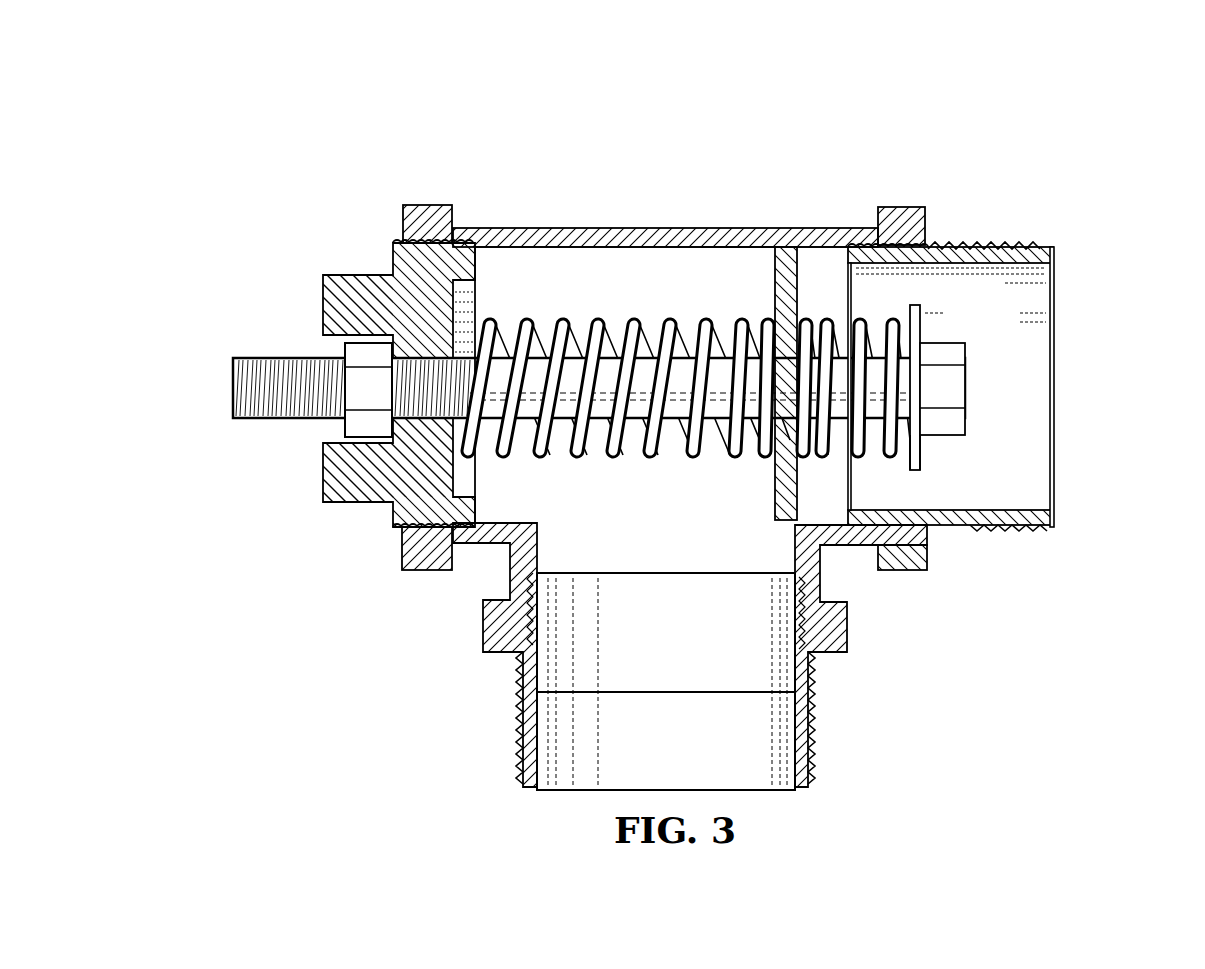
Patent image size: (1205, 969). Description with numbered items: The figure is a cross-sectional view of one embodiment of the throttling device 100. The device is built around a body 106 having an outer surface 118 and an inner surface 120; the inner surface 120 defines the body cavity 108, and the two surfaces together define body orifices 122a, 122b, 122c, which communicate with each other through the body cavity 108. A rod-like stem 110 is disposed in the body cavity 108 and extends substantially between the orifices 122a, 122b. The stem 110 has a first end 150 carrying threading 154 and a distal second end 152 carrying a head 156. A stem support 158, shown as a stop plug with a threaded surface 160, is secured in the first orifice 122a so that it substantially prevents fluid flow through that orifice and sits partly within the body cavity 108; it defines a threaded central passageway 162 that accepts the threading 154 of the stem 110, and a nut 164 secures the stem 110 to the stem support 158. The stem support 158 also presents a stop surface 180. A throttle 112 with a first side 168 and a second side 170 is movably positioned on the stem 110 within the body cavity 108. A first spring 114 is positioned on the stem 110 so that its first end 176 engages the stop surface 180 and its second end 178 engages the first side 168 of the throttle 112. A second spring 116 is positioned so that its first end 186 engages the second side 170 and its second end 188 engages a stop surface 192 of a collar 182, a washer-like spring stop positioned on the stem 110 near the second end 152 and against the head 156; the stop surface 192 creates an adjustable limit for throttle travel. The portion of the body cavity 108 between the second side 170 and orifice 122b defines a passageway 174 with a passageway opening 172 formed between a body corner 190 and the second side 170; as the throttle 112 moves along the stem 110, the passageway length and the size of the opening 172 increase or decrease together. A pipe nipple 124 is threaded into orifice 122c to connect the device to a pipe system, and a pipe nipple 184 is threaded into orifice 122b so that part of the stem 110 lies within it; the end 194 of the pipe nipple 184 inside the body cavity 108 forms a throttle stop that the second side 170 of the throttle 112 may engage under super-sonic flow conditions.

The throttling device 100 is at (327, 115).
The body 106 is at (402, 240).
The body cavity 108 is at (550, 272).
The stem 110 is at (655, 358).
The throttle 112 is at (808, 285).
The first spring 114 is at (636, 318).
The second spring 116 is at (922, 532).
The outer surface 118 is at (498, 228).
The inner surface 120 is at (590, 253).
The first body orifice 122a is at (420, 548).
The second body orifice 122b is at (935, 248).
The third body orifice 122c is at (515, 665).
The pipe nipple 124 is at (527, 692).
The first end of stem 150 is at (234, 376).
The second end of stem 152 is at (967, 398).
The threading 154 is at (273, 380).
The head 156 is at (967, 362).
The stem support 158 is at (353, 473).
The threaded surface 160 is at (393, 243).
The central passageway 162 is at (433, 423).
The nut 164 is at (357, 430).
The first side of throttle 168 is at (763, 277).
The second side of throttle 170 is at (875, 295).
The passageway opening 172 is at (795, 523).
The passageway 174 is at (812, 262).
The first end of first spring 176 is at (446, 345).
The second end of first spring 178 is at (783, 262).
The stop surface 180 is at (460, 305).
The collar 182 is at (917, 333).
The pipe nipple 184 is at (1047, 525).
The first end of second spring 186 is at (815, 340).
The second end of second spring 188 is at (917, 430).
The body corner 190 is at (820, 548).
The stop surface 192 is at (870, 263).
The end of pipe nipple 194 is at (907, 316).